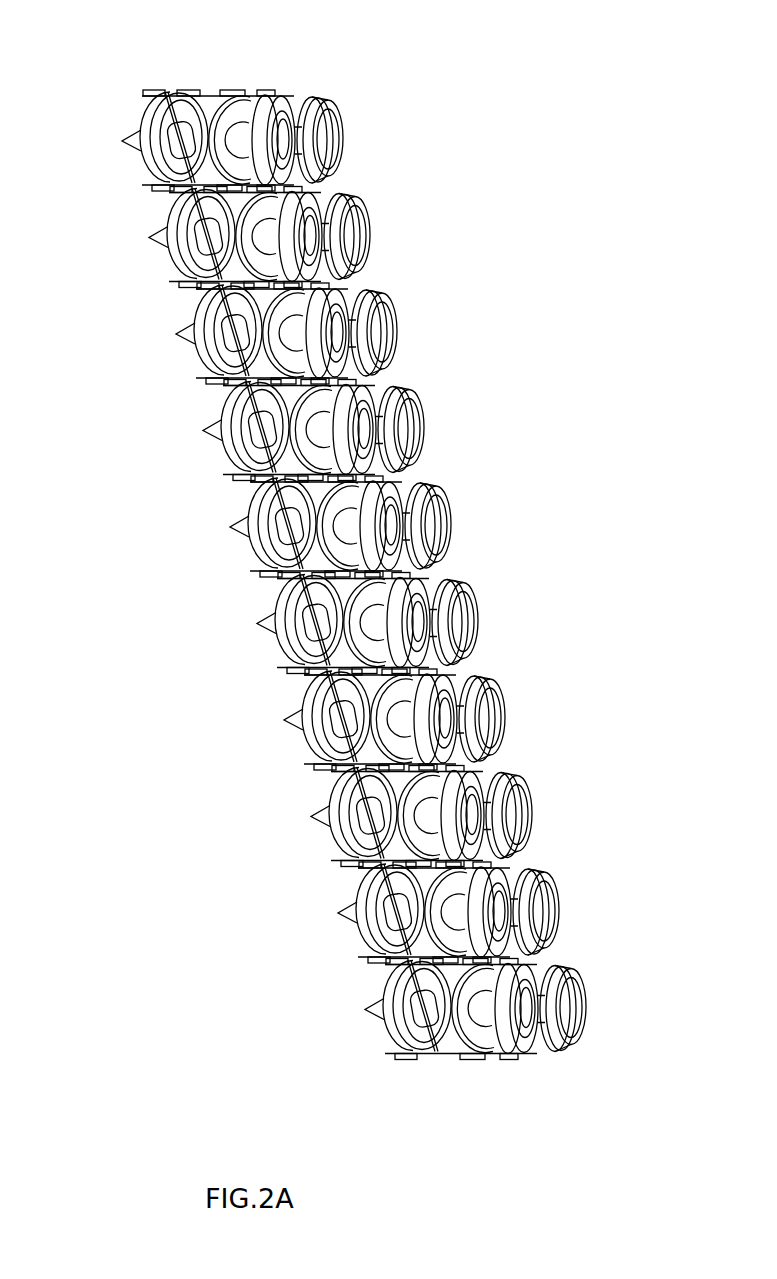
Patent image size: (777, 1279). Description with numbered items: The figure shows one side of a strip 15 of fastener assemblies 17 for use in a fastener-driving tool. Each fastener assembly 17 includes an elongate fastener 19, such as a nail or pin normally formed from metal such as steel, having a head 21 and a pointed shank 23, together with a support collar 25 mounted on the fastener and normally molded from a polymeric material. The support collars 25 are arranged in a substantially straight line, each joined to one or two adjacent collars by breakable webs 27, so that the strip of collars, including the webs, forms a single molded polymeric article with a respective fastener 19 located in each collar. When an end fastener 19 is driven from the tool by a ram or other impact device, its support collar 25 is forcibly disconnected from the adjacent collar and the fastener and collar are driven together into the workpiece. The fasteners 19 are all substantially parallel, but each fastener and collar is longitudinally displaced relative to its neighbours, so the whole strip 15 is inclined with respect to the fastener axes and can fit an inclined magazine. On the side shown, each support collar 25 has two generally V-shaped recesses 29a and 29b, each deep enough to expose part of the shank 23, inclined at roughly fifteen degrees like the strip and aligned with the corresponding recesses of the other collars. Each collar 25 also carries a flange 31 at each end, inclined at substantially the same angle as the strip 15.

The strip 15 is at (148, 595).
The fastener assembly 17 is at (365, 97).
The elongate fastener 19 is at (504, 540).
The head 21 is at (382, 325).
The pointed shank 23 is at (320, 817).
The support collar 25 is at (203, 103).
The breakable web 27 is at (473, 865).
The recess 29a is at (408, 1047).
The recess 29b is at (485, 1047).
The flange 31 is at (420, 710).